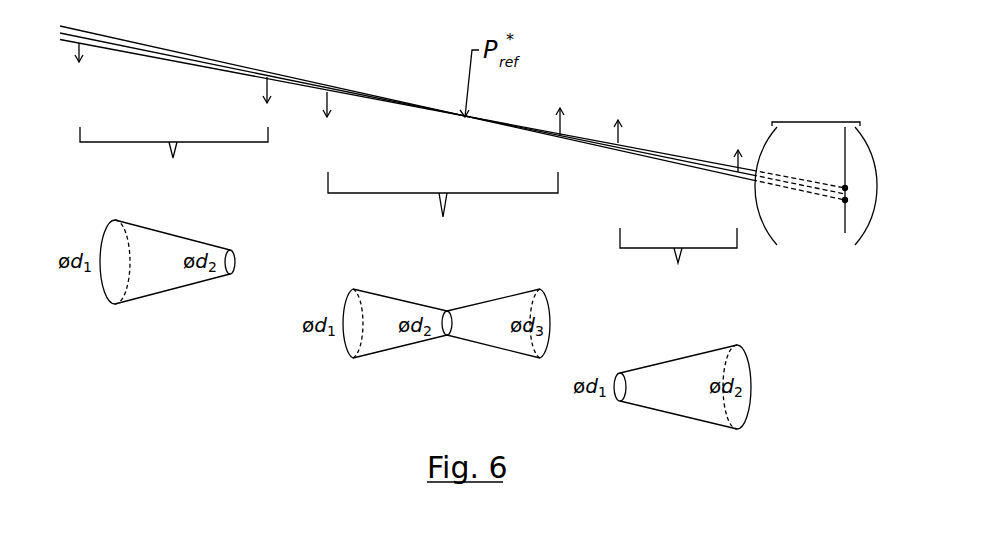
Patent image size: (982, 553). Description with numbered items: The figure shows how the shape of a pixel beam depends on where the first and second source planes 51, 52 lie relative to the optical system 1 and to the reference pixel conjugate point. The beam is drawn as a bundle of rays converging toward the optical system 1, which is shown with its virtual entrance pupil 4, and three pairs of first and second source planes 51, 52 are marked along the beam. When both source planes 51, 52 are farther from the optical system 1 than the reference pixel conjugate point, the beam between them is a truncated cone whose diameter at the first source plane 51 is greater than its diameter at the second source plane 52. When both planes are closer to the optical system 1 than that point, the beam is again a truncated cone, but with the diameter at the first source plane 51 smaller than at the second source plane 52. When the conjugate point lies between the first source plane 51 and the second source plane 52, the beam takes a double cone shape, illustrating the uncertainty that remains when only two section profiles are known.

The optical system 1 is at (816, 157).
The virtual entrance pupil 4 is at (821, 211).
The first source plane 51 is at (371, 176).
The second source plane 52 is at (462, 183).